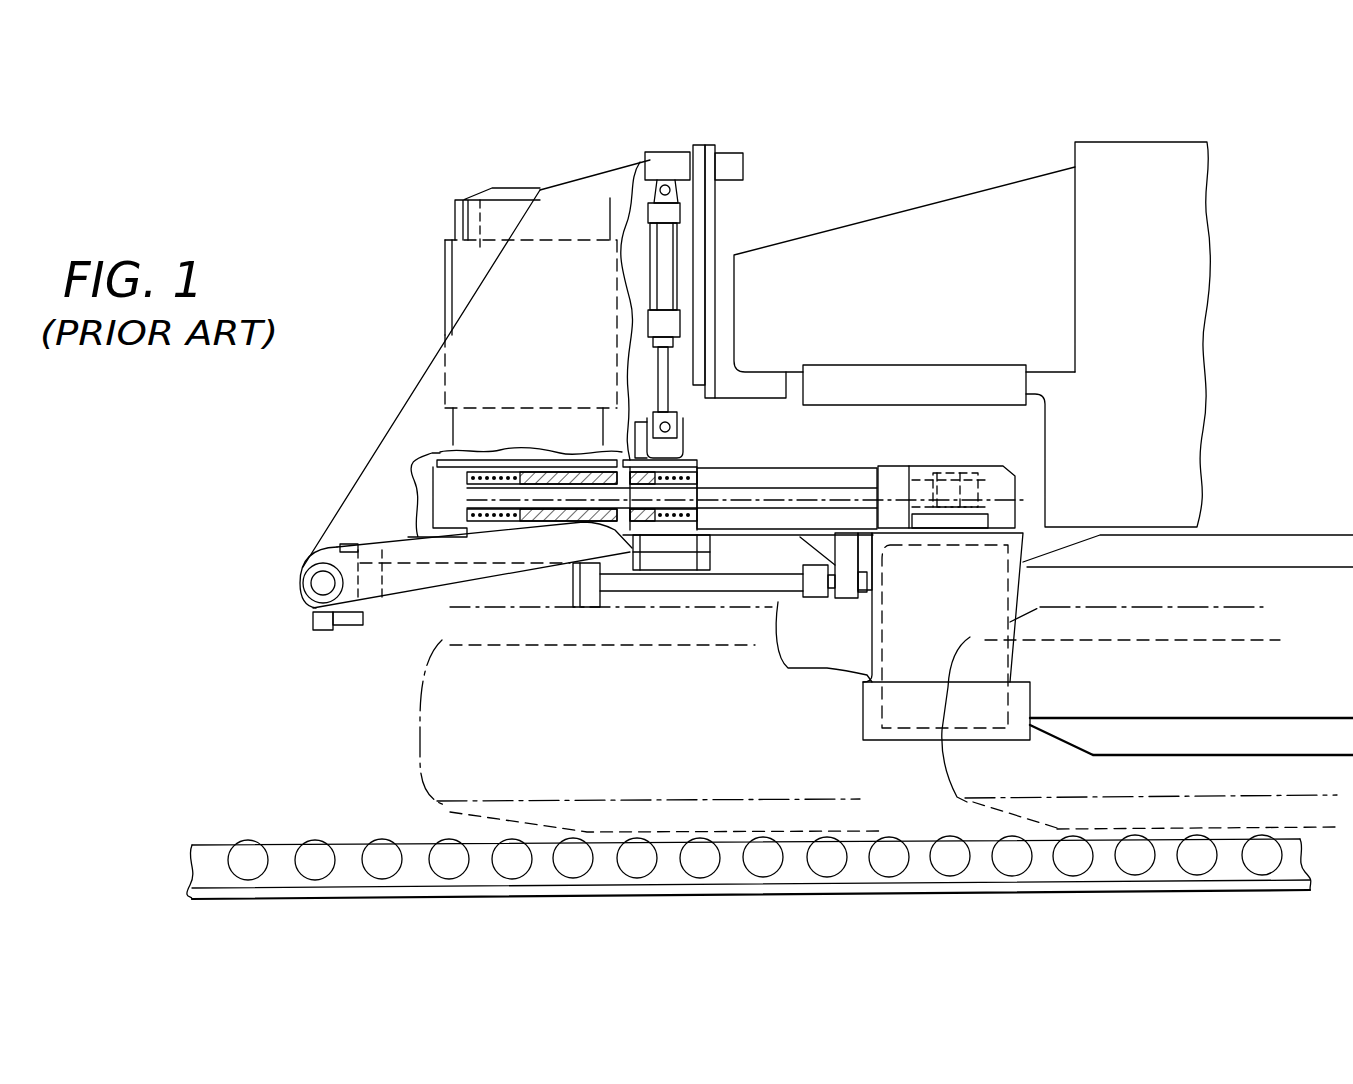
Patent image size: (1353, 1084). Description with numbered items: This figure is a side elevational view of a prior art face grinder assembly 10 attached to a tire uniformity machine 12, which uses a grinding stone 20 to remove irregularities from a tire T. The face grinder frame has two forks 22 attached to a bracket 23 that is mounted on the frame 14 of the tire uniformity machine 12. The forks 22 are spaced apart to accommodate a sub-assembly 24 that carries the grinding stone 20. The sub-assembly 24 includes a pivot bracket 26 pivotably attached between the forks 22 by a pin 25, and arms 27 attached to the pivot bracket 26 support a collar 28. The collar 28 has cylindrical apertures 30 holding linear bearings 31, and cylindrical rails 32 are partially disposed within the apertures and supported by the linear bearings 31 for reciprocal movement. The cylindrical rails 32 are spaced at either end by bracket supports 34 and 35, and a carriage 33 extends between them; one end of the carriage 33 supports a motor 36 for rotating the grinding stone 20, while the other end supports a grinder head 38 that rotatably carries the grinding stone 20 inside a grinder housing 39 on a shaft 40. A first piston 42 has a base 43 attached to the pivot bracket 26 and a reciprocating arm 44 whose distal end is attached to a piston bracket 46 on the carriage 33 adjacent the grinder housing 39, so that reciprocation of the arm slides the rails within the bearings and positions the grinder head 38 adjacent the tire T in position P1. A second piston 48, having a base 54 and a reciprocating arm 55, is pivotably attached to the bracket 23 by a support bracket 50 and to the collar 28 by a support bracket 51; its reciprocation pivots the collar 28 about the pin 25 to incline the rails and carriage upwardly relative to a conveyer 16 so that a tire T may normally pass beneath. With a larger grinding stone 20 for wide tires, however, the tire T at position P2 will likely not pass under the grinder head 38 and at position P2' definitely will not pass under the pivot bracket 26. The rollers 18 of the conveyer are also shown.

The prior art face grinder assembly 10 is at (413, 224).
The tire uniformity machine 12 is at (900, 196).
The frame 14 is at (832, 247).
The conveyer 16 is at (190, 857).
The rollers 18 is at (303, 848).
The grinding stone 20 is at (1003, 665).
The forks 22 is at (409, 403).
The bracket 23 is at (709, 147).
The sub-assembly 24 is at (392, 530).
The pin 25 is at (320, 584).
The pivot bracket 26 is at (323, 630).
The arms 27 is at (385, 547).
The collar 28 is at (572, 452).
The cylindrical apertures 30 is at (567, 572).
The linear bearings 31 is at (492, 590).
The cylindrical rails 32 is at (730, 492).
The carriage 33 is at (813, 473).
The bracket support 34 is at (445, 488).
The bracket support 35 is at (896, 480).
The motor 36 is at (502, 207).
The grinder head 38 is at (895, 742).
The grinder housing 39 is at (932, 670).
The shaft 40 is at (946, 500).
The first piston 42 is at (447, 605).
The base 43 is at (532, 583).
The reciprocating arm 44 is at (745, 575).
The piston bracket 46 is at (843, 600).
The second piston 48 is at (641, 240).
The support bracket 50 is at (672, 160).
The support bracket 51 is at (672, 445).
The base 54 is at (668, 275).
The reciprocating arm 55 is at (665, 372).
The tire T is at (1117, 707).
The position P1 is at (1200, 760).
The position P2 is at (887, 801).
The position P2' is at (382, 722).